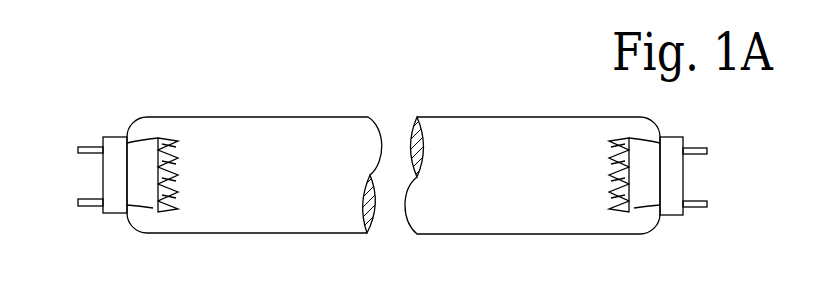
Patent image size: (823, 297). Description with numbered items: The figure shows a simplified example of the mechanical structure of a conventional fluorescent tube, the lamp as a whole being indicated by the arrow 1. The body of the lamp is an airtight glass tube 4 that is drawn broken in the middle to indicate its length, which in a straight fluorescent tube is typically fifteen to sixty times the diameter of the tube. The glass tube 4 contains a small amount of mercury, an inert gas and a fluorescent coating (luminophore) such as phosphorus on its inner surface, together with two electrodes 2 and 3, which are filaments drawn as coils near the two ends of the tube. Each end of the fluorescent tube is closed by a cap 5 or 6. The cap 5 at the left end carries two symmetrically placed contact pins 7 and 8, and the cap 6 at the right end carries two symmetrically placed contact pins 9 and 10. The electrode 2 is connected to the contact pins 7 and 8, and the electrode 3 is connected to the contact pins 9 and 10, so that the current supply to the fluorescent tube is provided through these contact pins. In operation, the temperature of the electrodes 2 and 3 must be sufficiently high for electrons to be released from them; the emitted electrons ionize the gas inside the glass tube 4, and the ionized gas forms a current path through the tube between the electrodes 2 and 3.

The lamp 1 is at (336, 99).
The electrode 2 is at (140, 204).
The electrode 3 is at (633, 208).
The glass tube 4 is at (190, 117).
The cap 5 is at (120, 135).
The cap 6 is at (677, 133).
The contact pin 7 is at (90, 143).
The contact pin 8 is at (90, 205).
The contact pin 9 is at (697, 147).
The contact pin 10 is at (697, 207).